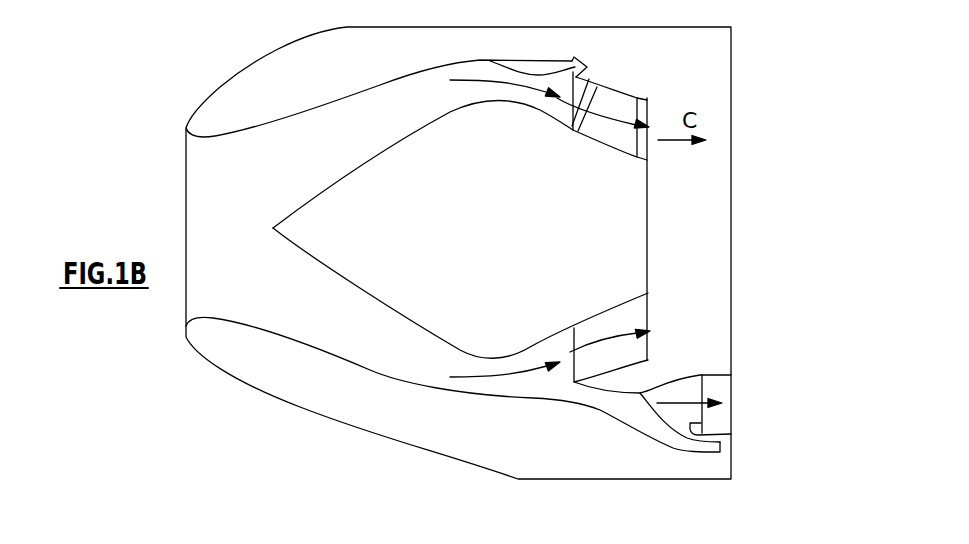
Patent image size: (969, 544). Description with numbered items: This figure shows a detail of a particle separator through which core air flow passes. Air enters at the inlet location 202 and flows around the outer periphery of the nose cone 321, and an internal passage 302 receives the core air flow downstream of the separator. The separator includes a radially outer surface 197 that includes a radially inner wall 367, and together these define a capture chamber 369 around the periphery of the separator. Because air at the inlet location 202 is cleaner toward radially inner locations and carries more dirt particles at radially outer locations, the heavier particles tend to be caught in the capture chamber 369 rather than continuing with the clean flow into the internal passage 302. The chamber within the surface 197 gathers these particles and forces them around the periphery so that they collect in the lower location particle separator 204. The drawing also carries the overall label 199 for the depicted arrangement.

The gas turbine engine nacelle 199 is at (718, 70).
The nose cone 321 is at (413, 272).
The radially inner wall 367 is at (590, 68).
The radially outer surface 197 is at (575, 59).
The capture chamber 369 is at (490, 61).
The internal passage 302 is at (630, 318).
The inlet location 202 is at (494, 380).
The lower location particle separator 204 is at (707, 446).